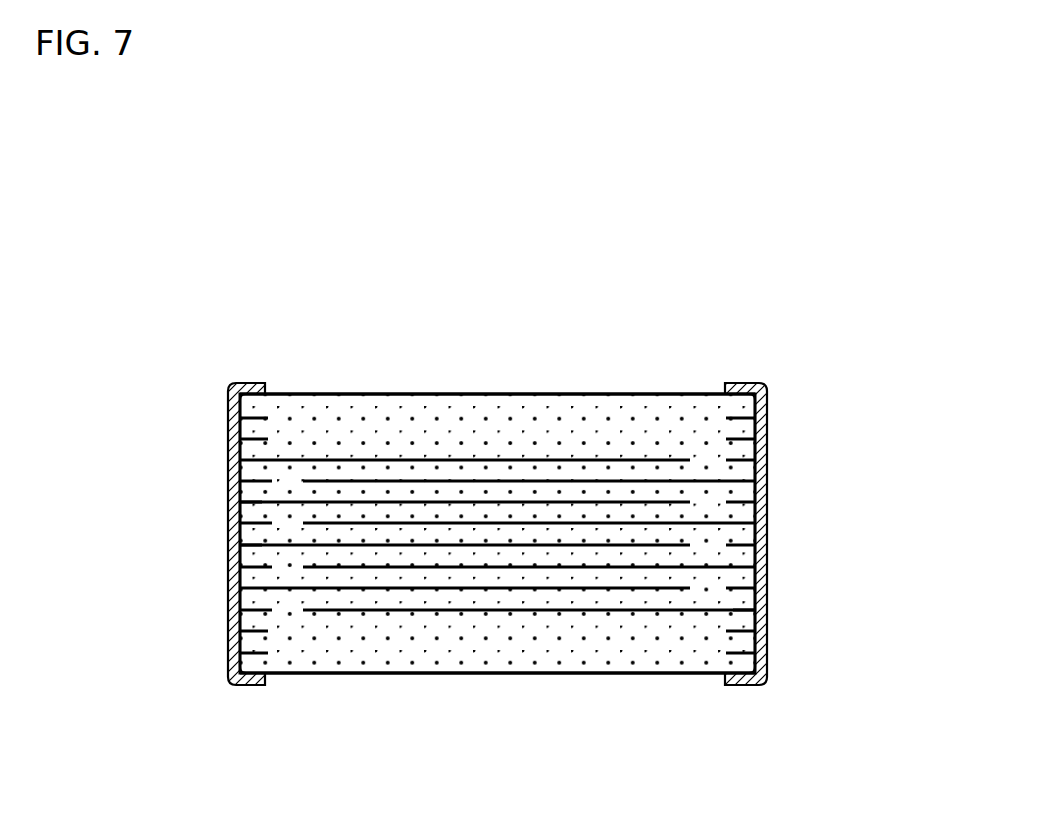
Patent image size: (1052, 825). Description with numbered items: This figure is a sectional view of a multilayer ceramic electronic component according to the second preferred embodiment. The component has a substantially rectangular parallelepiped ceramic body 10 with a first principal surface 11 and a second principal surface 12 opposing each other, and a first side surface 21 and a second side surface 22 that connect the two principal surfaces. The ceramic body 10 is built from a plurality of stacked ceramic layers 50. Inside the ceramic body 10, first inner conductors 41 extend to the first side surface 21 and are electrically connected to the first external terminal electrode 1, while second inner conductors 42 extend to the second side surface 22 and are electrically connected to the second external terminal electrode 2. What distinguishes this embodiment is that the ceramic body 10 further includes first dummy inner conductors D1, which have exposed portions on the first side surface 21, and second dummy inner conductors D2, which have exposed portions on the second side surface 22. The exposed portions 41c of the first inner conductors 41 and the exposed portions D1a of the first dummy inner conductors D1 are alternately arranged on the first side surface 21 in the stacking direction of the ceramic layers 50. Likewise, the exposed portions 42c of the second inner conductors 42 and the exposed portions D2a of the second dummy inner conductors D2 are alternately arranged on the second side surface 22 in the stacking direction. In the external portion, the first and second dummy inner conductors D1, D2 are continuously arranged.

The first external terminal electrode 1 is at (230, 448).
The second external terminal electrode 2 is at (768, 485).
The ceramic body 10 is at (608, 390).
The first principal surface 11 is at (467, 394).
The second principal surface 12 is at (394, 673).
The first side surface 21 is at (238, 482).
The second side surface 22 is at (767, 506).
The first inner conductors 41 is at (331, 458).
The exposed portions of the first inner conductors 41c is at (240, 532).
The second inner conductors 42 is at (675, 462).
The exposed portions of the second inner conductors 42c is at (768, 612).
The ceramic layers 50 is at (608, 578).
The first dummy inner conductors D1 is at (263, 654).
The exposed portions of the first dummy inner conductors D1a is at (268, 610).
The second dummy inner conductors D2 is at (738, 437).
The exposed portions of the second dummy inner conductors D2a is at (740, 587).